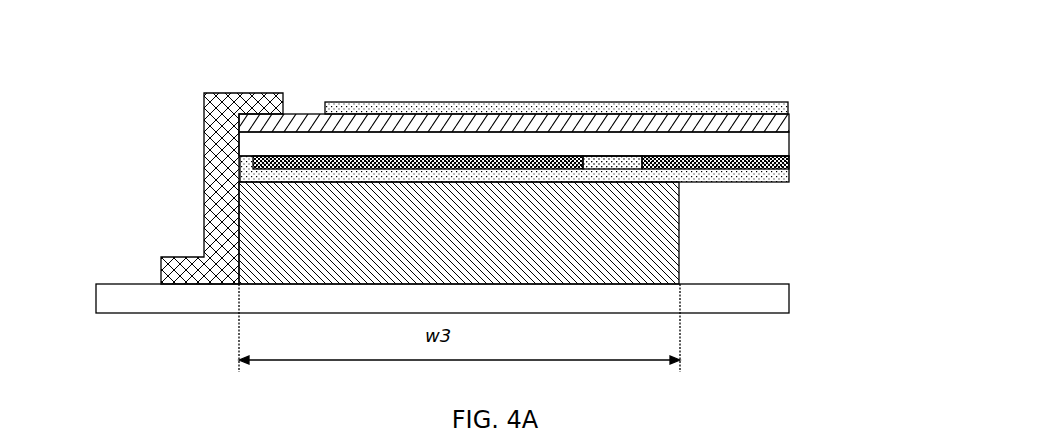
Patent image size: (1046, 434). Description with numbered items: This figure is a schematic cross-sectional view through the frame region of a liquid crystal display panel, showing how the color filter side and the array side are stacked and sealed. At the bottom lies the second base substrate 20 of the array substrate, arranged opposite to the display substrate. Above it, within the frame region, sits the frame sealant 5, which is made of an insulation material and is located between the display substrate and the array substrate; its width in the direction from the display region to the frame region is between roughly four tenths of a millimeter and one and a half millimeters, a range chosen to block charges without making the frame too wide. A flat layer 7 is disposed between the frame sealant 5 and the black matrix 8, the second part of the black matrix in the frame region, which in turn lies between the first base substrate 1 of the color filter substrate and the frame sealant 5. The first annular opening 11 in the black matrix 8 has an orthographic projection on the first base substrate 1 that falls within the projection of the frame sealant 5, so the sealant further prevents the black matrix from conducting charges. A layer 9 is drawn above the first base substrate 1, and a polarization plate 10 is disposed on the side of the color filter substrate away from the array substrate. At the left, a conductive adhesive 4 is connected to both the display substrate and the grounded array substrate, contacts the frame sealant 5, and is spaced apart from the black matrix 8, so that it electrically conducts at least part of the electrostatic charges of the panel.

The first base substrate 1 is at (777, 143).
The conductive adhesive 4 is at (217, 150).
The frame sealant 5 is at (647, 240).
The flat layer 7 is at (789, 182).
The black matrix 8 is at (789, 163).
The cover layer 9 is at (789, 113).
The polarization plate 10 is at (650, 108).
The first annular opening 11 is at (596, 152).
The second base substrate 20 is at (120, 283).